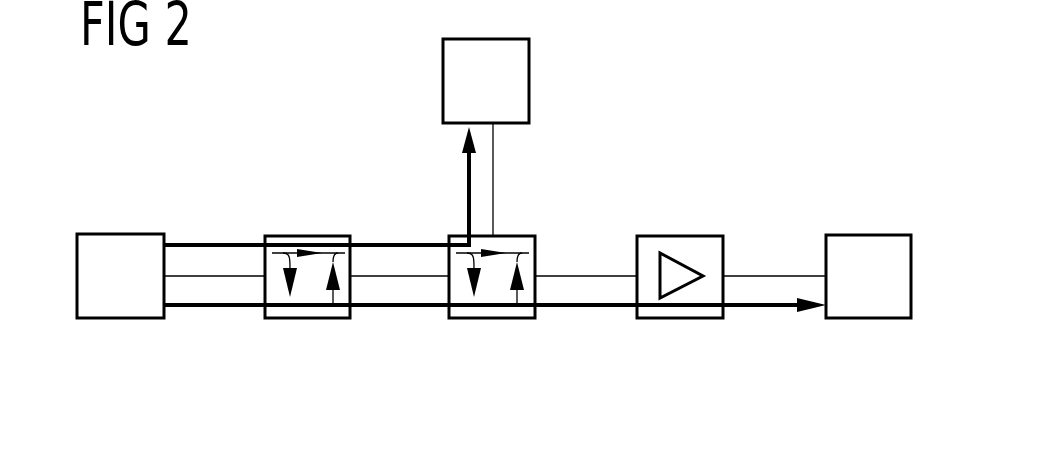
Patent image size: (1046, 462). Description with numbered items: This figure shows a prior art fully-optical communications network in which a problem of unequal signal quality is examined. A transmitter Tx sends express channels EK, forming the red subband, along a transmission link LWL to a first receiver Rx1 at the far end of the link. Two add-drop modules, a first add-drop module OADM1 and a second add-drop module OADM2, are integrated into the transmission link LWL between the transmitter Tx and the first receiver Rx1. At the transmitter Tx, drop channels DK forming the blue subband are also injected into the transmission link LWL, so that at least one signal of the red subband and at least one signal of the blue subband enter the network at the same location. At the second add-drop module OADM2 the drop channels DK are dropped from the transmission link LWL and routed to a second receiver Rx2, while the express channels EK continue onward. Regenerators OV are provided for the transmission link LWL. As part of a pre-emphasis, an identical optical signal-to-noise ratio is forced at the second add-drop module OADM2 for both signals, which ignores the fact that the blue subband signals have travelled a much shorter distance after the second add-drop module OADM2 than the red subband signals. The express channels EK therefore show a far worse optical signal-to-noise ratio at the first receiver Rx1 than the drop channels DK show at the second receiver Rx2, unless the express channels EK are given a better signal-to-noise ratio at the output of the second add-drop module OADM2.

The transmitter Tx is at (120, 232).
The drop channels DK is at (207, 242).
The express channels EK is at (218, 297).
The transmission link LWL is at (569, 273).
The first add-drop module OADM1 is at (304, 234).
The second add-drop module OADM2 is at (487, 320).
The regenerators OV is at (681, 234).
The first receiver Rx1 is at (869, 234).
The second receiver Rx2 is at (529, 80).